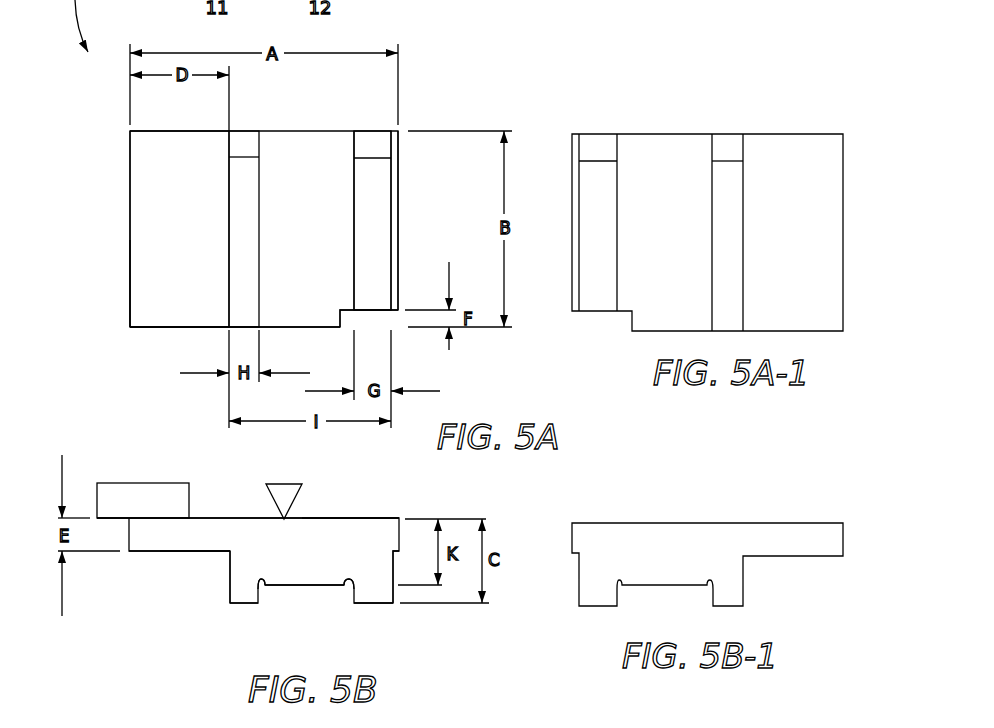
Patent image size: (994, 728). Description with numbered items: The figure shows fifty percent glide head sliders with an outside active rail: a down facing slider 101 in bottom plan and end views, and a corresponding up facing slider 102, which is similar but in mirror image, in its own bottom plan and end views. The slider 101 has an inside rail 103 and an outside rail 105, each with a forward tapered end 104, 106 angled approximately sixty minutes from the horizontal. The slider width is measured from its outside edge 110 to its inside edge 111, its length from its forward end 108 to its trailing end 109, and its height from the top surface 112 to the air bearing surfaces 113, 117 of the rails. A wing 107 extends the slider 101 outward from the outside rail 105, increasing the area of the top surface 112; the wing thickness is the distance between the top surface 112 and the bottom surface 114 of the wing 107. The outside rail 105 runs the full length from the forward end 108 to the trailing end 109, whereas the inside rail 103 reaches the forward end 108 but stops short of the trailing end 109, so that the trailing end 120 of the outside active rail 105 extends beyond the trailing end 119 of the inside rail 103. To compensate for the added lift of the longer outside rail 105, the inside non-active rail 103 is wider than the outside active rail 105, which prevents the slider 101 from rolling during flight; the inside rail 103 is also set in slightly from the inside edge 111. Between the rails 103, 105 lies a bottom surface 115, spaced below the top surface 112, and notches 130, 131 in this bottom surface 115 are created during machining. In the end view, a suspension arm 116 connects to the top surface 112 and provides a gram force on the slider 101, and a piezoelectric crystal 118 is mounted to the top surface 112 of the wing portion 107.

In FIG. 5B, the down facing slider 101 is at (89, 438).
In FIG. 5A-1, the up facing slider 102 is at (781, 95).
In FIG. 5B-1, the up facing slider 102 is at (781, 498).
In FIG. 5A, the inside rail 103 is at (354, 187).
In FIG. 5B, the inside rail 103 is at (382, 597).
In FIG. 5A, the forward tapered end 104 is at (372, 131).
In FIG. 5A, the outside rail 105 is at (229, 187).
In FIG. 5B, the outside rail 105 is at (230, 590).
In FIG. 5A, the forward tapered end 106 is at (244, 131).
In FIG. 5A, the wing 107 is at (137, 287).
In FIG. 5B, the wing 107 is at (110, 553).
In FIG. 5A, the forward end 108 is at (157, 128).
In FIG. 5A, the trailing end 109 is at (141, 329).
In FIG. 5A, the outside edge 110 is at (130, 222).
In FIG. 5A, the inside edge 111 is at (398, 210).
In FIG. 5B, the top surface 112 is at (375, 518).
In FIG. 5B, the air bearing surface 113 is at (372, 605).
In FIG. 5B, the bottom surface of wing 114 is at (143, 553).
In FIG. 5B, the bottom surface 115 is at (310, 587).
In FIG. 5B, the suspension arm 116 is at (291, 503).
In FIG. 5B, the air bearing surface 117 is at (244, 604).
In FIG. 5B, the piezoelectric crystal 118 is at (97, 497).
In FIG. 5A, the trailing end of inside rail 119 is at (372, 310).
In FIG. 5A, the trailing end of outside active rail 120 is at (243, 327).
In FIG. 5B, the notch 130 is at (263, 586).
In FIG. 5B, the notch 131 is at (349, 587).